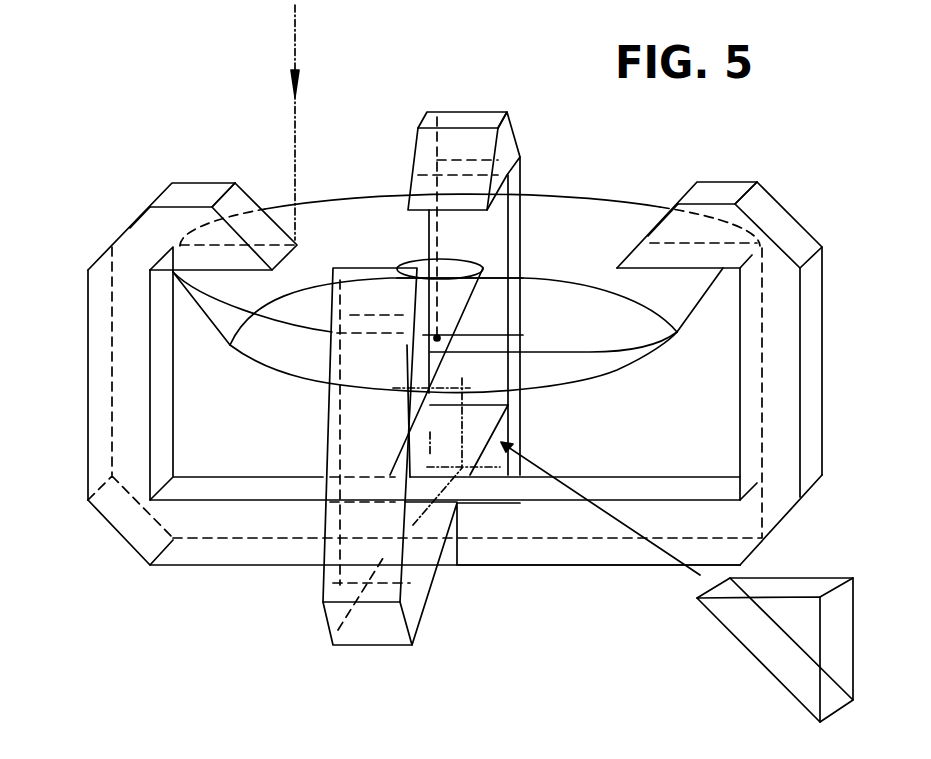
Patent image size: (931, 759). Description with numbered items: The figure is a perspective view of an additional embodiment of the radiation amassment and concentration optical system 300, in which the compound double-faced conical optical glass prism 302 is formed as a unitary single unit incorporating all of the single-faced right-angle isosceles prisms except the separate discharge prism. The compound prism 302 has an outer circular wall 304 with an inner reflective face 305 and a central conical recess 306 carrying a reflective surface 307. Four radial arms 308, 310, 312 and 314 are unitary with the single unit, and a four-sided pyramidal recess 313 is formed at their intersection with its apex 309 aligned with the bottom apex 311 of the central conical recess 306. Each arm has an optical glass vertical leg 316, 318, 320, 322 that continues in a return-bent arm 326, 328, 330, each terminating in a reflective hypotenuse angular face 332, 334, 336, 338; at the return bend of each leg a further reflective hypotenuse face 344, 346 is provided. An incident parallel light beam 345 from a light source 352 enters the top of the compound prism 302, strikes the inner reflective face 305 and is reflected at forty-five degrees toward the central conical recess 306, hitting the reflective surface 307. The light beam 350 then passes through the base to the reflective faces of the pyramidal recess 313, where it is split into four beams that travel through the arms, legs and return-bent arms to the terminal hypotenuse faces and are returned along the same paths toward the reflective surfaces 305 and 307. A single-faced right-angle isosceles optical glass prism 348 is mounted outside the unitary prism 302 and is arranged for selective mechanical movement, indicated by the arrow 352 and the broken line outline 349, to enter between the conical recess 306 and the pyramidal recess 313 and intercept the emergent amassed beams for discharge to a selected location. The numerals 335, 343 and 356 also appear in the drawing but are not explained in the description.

The radiation amassment and concentration optical system 300 is at (216, 152).
The compound double-faced conical optical glass prism 302 is at (587, 192).
The outer circular wall 304 is at (320, 197).
The inner reflective face 305 is at (616, 218).
The central conical recess 306 is at (423, 275).
The reflective surface 307 is at (510, 285).
The radial arm 308 is at (510, 439).
The apex 309 is at (500, 504).
The radial arm 310 is at (672, 500).
The bottom apex 311 is at (590, 352).
The radial arm 312 is at (418, 613).
The four-sided pyramidal recess 313 is at (418, 612).
The radial arm 314 is at (234, 477).
The vertical leg 316 is at (518, 240).
The vertical leg 318 is at (812, 418).
The vertical leg 320 is at (323, 432).
The vertical leg 322 is at (88, 340).
The return-bent arm 326 is at (723, 185).
The return-bent arm 328 is at (323, 283).
The return-bent arm 330 is at (182, 220).
The reflective hypotenuse angular face 332 is at (512, 134).
The reflective hypotenuse angular face 334 is at (795, 236).
The slab base 335 is at (340, 615).
The reflective hypotenuse angular face 336 is at (290, 366).
The reflective hypotenuse angular face 338 is at (130, 230).
The bottom right chamfer 343 is at (780, 518).
The reflective hypotenuse angular face 344 is at (374, 270).
The incident parallel light beam 345 is at (298, 42).
The reflective hypotenuse angular face 346 is at (476, 145).
The single-faced right-angle isosceles optical glass prism 348 is at (656, 215).
The broken line outline 349 is at (470, 422).
The light beam 350 is at (233, 205).
The light source 352 is at (658, 550).
The bottom left chamfer 356 is at (138, 527).